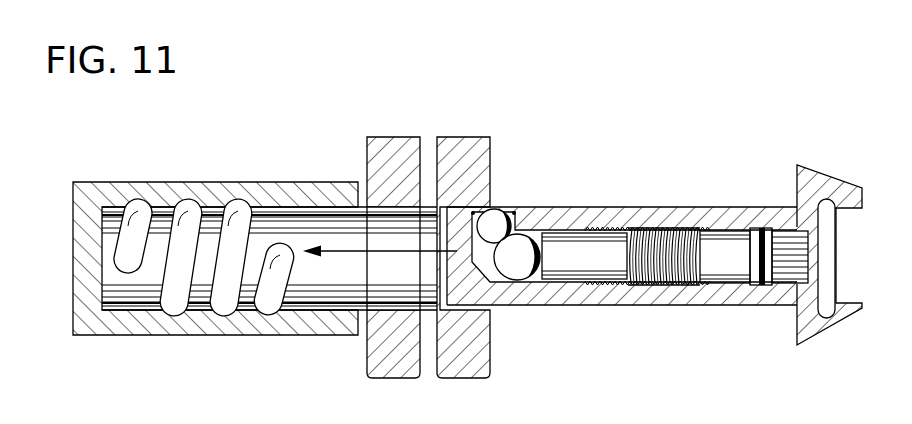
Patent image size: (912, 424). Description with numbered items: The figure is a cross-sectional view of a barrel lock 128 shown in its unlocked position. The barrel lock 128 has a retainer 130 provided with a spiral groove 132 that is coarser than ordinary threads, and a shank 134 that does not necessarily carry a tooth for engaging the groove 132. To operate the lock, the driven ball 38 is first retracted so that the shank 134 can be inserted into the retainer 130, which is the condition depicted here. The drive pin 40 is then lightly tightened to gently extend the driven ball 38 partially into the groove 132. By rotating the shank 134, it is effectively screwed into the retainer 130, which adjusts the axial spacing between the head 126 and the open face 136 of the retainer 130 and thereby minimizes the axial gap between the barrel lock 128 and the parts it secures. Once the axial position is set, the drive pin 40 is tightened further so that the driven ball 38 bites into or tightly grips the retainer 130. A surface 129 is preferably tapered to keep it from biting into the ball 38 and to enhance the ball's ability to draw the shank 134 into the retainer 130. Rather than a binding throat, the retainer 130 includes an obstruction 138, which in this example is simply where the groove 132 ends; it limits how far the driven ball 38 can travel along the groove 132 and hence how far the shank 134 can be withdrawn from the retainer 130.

The barrel lock 128 is at (582, 220).
The retainer 130 is at (150, 181).
The surface 129 is at (183, 197).
The obstruction 138 is at (267, 246).
The spiral groove 132 is at (160, 268).
The open face 136 is at (360, 193).
The shank 134 is at (598, 207).
The driven ball 38 is at (490, 216).
The drive pin 40 is at (725, 273).
The head 126 is at (828, 337).